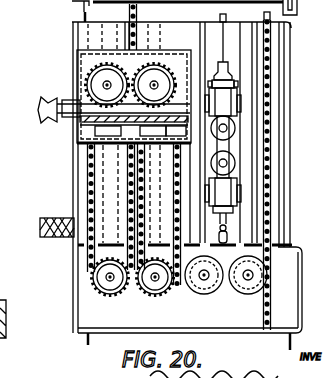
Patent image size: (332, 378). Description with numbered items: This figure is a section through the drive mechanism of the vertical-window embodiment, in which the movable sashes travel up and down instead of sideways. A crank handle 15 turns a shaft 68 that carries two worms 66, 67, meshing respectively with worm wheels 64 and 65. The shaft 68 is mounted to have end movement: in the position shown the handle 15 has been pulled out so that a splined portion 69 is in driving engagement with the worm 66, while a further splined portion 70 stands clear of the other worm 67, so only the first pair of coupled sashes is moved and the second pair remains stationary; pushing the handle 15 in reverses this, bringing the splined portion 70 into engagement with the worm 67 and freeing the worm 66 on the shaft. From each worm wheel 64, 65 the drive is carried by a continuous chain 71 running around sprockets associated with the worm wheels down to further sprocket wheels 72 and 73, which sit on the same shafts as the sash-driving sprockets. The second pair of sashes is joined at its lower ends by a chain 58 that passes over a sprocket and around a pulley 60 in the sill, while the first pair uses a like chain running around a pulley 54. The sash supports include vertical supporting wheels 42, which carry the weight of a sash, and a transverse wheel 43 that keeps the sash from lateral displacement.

The crank handle 15 is at (48, 108).
The vertical supporting wheels 42 is at (232, 83).
The transverse wheel 43 is at (225, 128).
The pulley 54 is at (217, 291).
The chain 58 is at (272, 167).
The pulley 60 is at (287, 249).
The worm wheel 64 is at (152, 66).
The worm wheel 65 is at (96, 72).
The worm 66 is at (184, 14).
The worm 67 is at (141, 143).
The shaft 68 is at (79, 125).
The splined portion 69 is at (171, 134).
The splined portion 70 is at (80, 141).
The continuous chain 71 is at (87, 190).
The sprocket wheel 72 is at (151, 286).
The sprocket wheel 73 is at (112, 284).